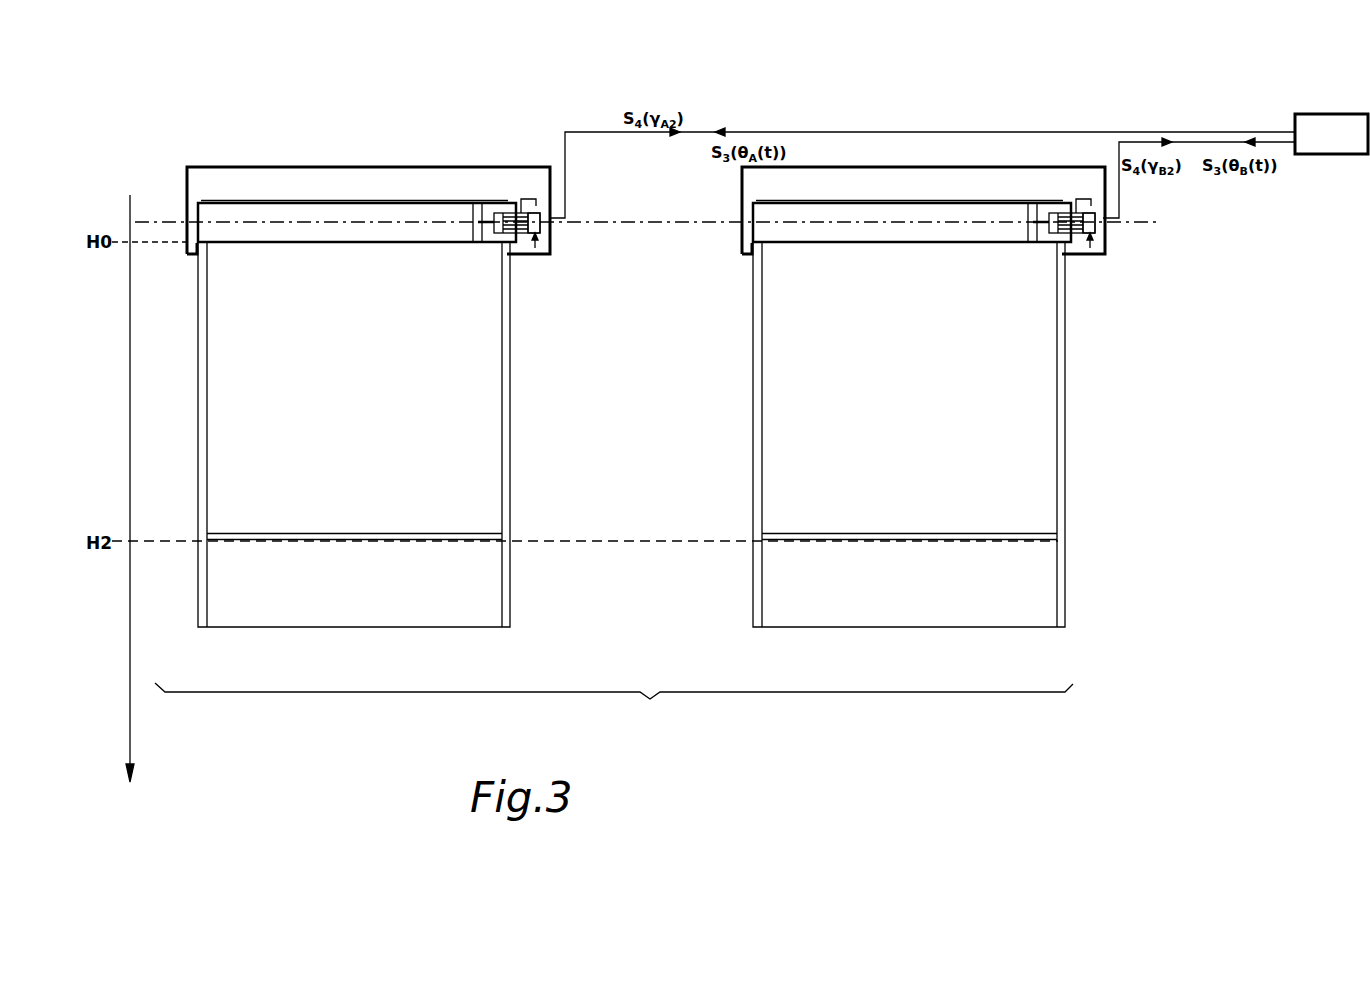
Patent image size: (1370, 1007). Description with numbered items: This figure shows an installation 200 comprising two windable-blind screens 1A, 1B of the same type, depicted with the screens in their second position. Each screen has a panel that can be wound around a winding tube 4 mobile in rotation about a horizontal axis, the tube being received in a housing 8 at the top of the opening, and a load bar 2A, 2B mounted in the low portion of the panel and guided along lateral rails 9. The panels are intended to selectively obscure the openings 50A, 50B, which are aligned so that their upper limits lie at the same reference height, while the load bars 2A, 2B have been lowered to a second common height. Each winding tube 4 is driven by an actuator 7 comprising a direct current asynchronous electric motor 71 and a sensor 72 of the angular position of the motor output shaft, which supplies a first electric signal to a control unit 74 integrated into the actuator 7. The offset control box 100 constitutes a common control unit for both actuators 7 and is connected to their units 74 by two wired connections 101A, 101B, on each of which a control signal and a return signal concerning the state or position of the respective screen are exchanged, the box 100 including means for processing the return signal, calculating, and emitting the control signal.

The first screen 1A is at (517, 379).
The second screen 1B is at (1072, 379).
The load bar of first screen 2A is at (402, 542).
The load bar of second screen 2B is at (957, 542).
The winding tube 4 is at (330, 243).
The actuator 7 is at (515, 207).
The housing / box 8 is at (290, 167).
The lateral guide rails 9 is at (503, 600).
The first opening 50A is at (341, 606).
The second opening 50B is at (895, 606).
The electric motor 71 is at (533, 206).
The sensor 72 is at (492, 231).
The control unit 74 is at (541, 229).
The control box 100 is at (1331, 134).
The first wired connection 101A is at (868, 132).
The second wired connection 101B is at (1218, 142).
The installation 200 is at (614, 705).